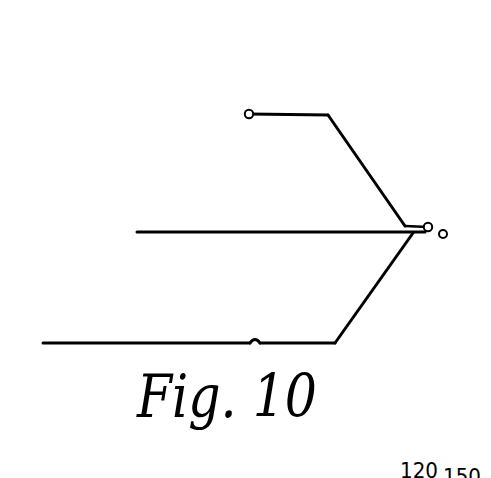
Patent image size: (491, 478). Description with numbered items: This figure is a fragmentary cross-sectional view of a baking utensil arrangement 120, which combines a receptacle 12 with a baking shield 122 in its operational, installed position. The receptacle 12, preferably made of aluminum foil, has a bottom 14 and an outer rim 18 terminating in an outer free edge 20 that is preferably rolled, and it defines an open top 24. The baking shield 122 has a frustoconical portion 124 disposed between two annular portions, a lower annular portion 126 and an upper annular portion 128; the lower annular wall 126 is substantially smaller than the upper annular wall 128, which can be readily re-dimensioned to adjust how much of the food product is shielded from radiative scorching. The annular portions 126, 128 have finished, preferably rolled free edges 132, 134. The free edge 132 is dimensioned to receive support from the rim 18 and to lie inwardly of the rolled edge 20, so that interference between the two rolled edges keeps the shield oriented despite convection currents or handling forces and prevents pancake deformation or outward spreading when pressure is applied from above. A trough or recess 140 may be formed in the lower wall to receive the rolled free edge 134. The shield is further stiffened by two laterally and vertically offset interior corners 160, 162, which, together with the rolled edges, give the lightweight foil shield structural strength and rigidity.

The baking utensil arrangement 120 is at (158, 157).
The annular portion 128 is at (285, 112).
The free edge 134 is at (244, 109).
The frustoconical portion 124 is at (362, 155).
The baking shield 122 is at (340, 123).
The interior corner 162 is at (323, 120).
The interior corner 160 is at (403, 226).
The open top 24 is at (192, 230).
The annular portion 126 is at (425, 222).
The free edge 132 is at (433, 223).
The outer rim 18 is at (418, 237).
The outer free edge 20 is at (447, 238).
The receptacle 12 is at (368, 300).
The bottom 14 is at (103, 340).
The trough or recess 140 is at (255, 340).